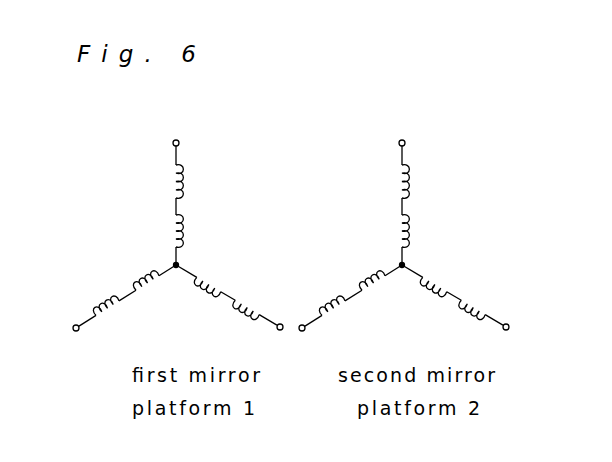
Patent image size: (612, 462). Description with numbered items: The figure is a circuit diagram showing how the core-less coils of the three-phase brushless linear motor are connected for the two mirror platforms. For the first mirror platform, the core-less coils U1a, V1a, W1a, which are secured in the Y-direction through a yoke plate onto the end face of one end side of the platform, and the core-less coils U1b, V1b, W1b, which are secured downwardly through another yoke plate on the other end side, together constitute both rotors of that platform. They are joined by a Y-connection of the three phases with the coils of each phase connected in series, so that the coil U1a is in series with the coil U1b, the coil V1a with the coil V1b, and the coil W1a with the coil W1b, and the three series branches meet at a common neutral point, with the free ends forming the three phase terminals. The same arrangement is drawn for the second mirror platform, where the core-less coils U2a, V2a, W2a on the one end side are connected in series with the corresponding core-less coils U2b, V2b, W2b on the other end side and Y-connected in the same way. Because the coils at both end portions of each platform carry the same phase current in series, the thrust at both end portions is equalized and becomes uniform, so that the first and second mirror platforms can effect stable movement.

The core-less coil U1a is at (200, 182).
The core-less coil U1b is at (201, 231).
The core-less coil V1a is at (115, 318).
The core-less coil V1b is at (155, 292).
The core-less coil W1a is at (261, 304).
The core-less coil W1b is at (220, 278).
The core-less coil U2a is at (430, 182).
The core-less coil U2b is at (429, 231).
The core-less coil V2a is at (345, 316).
The core-less coil V2b is at (384, 291).
The core-less coil W2a is at (494, 307).
The core-less coil W2b is at (451, 280).